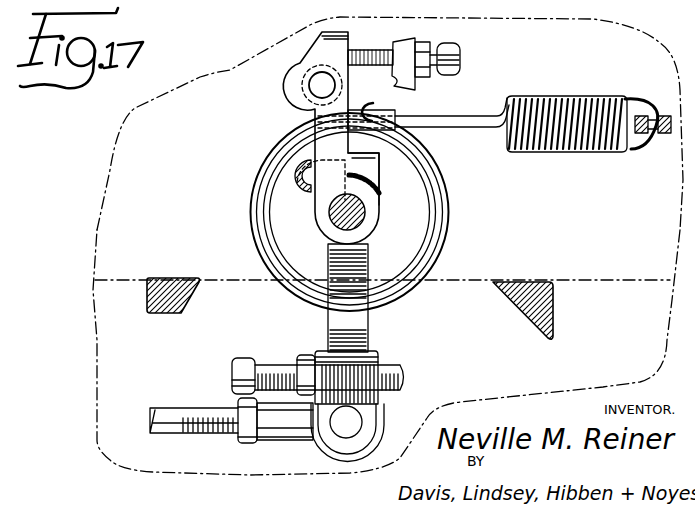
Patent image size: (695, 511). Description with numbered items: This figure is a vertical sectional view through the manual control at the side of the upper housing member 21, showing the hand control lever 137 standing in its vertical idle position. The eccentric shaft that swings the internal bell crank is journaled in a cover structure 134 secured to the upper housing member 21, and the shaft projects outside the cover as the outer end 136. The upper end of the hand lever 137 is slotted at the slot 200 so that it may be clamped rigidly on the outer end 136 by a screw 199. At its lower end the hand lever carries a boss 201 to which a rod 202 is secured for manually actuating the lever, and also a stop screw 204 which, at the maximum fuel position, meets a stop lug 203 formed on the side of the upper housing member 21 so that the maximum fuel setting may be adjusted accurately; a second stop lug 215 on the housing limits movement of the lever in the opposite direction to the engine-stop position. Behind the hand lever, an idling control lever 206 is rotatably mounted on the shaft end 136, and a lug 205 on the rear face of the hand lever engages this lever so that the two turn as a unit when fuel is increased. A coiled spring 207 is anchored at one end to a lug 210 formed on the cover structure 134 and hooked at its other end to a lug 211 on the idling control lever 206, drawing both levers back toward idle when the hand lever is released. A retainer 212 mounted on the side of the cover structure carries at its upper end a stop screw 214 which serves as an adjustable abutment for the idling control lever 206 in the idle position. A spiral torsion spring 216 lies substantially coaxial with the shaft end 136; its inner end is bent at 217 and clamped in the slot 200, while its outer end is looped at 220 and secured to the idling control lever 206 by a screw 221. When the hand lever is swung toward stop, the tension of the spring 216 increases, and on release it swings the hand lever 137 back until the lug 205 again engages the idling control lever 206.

The upper housing member 21 is at (108, 346).
The cover structure 134 is at (132, 191).
The outer end of shaft 136 is at (360, 215).
The hand control lever 137 is at (355, 328).
The screw 199 is at (297, 163).
The slot 200 is at (320, 196).
The boss 201 is at (350, 444).
The rod 202 is at (170, 417).
The stop lug 203 is at (522, 284).
The stop screw 204 is at (401, 378).
The lug 205 is at (368, 173).
The idling control lever 206 is at (323, 45).
The coiled spring 207 is at (572, 96).
The lug 210 is at (667, 134).
The lug 211 is at (375, 110).
The retainer 212 is at (407, 38).
The stop screw 214 is at (378, 48).
The stop lug 215 is at (163, 280).
The spiral torsion spring 216 is at (448, 228).
The bent inner end of spring 217 is at (380, 158).
The looped outer end of spring 220 is at (306, 71).
The screw 221 is at (321, 86).